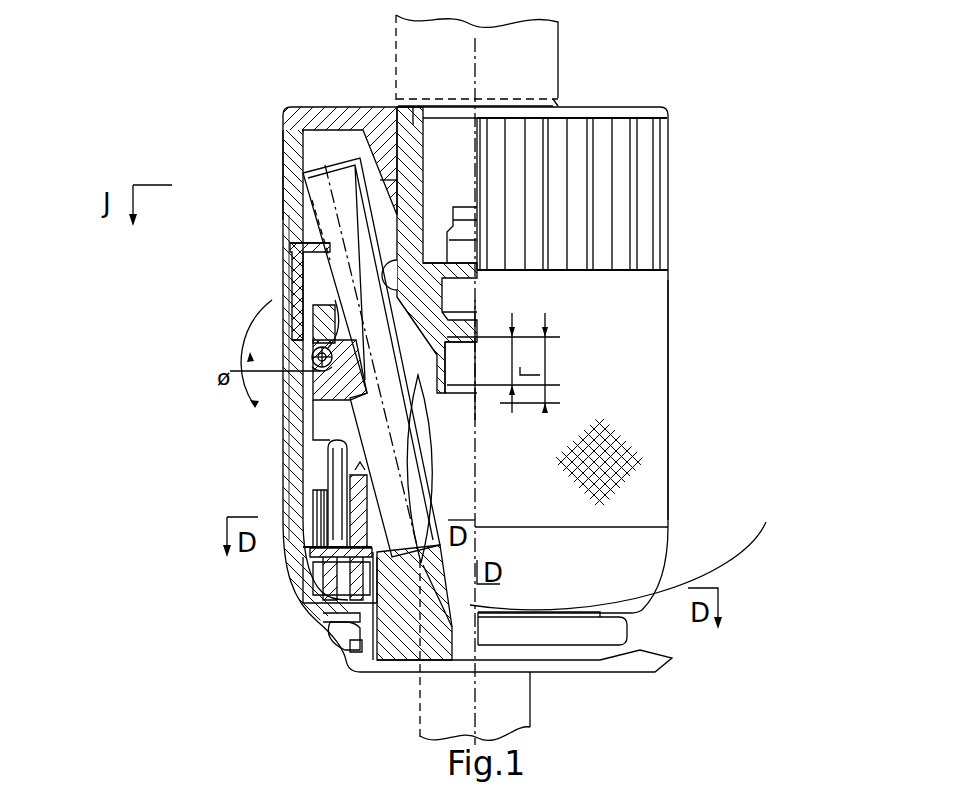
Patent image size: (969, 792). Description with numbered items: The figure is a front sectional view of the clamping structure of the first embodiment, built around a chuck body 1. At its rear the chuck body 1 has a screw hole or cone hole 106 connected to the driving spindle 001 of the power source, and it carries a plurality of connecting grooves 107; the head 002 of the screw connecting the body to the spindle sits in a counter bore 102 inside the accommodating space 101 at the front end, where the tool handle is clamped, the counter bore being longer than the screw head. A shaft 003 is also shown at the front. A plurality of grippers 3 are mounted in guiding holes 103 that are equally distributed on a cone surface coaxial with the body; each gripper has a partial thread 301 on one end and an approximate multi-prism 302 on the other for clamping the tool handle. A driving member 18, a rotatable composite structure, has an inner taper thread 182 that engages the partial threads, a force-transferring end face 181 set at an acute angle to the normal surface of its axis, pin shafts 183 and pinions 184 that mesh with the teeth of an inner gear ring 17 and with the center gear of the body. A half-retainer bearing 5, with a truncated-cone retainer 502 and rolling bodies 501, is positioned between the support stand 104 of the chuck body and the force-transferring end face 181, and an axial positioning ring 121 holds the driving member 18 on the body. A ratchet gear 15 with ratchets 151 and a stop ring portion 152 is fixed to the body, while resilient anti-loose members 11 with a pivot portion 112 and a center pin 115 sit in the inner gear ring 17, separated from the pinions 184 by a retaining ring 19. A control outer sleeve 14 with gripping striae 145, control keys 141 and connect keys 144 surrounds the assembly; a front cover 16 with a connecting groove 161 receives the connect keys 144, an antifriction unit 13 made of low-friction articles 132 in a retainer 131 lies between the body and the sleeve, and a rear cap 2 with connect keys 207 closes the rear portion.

The driving spindle 001 is at (507, 68).
The head of the screw 002 is at (382, 370).
The shaft 003 is at (503, 705).
The chuck body 1 is at (408, 120).
The accommodating space 101 is at (460, 498).
The counter bore 102 is at (460, 385).
The guiding holes 103 is at (388, 296).
The support stand 104 is at (305, 352).
The screw hole or cone hole 106 is at (462, 172).
The connecting grooves 107 is at (387, 187).
The rear cap 2 is at (367, 122).
The connect keys 207 is at (283, 127).
The grippers 3 is at (352, 208).
The partial thread 301 is at (323, 237).
The approximate multi-prism 302 is at (413, 452).
The half-retainer bearing 5 is at (221, 335).
The rolling bodies 501 is at (318, 352).
The retainer 502 is at (318, 360).
The antifriction unit 13 is at (290, 250).
The retainer 131 is at (268, 220).
The articles 132 is at (290, 305).
The control outer sleeve 14 is at (313, 340).
The driving member 18 is at (330, 400).
The force-transferring end face 181 is at (316, 366).
The inner taper thread 182 is at (460, 355).
The pin shafts 183 is at (330, 442).
The pinions 184 is at (318, 520).
The axial positioning ring 121 is at (337, 460).
The inner gear ring 17 is at (322, 500).
The retaining ring 19 is at (320, 533).
The center pin 115 is at (345, 580).
The resilient anti-loose members 11 is at (288, 580).
The pivot portion 112 is at (360, 597).
The control keys 141 is at (362, 590).
The connect keys 144 is at (347, 632).
The striae 145 is at (606, 437).
The ratchets 151 is at (423, 597).
The stop ring portion 152 is at (360, 644).
The connecting groove 161 is at (335, 620).
The front cover 16 is at (355, 667).
The ratchet gear 15 is at (375, 667).